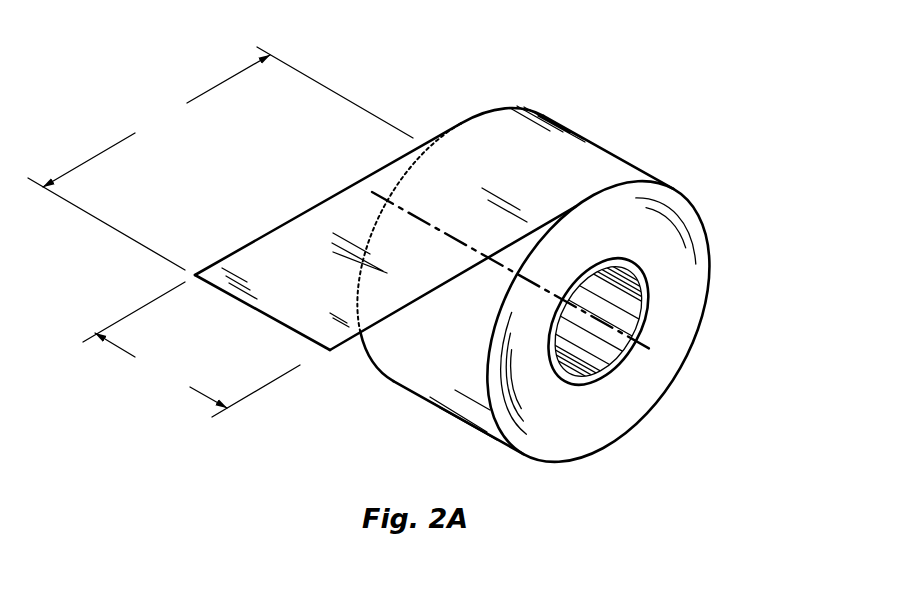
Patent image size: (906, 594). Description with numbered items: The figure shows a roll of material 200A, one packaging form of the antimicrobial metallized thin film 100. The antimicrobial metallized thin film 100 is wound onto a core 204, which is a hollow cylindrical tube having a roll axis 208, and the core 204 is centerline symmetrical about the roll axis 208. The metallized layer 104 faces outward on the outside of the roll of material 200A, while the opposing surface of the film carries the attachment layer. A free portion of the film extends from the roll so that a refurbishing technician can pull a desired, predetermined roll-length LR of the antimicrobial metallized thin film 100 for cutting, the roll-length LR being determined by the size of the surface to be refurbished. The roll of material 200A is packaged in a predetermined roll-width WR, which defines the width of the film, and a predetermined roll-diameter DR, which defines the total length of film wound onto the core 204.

The antimicrobial metallized thin film 100 is at (411, 236).
The metallized layer 104 is at (273, 298).
The roll of material 200A is at (568, 271).
The core 204 is at (613, 363).
The roll axis 208 is at (637, 341).
The roll-length LR is at (220, 158).
The roll-width WR is at (191, 349).
The roll-diameter DR is at (690, 198).